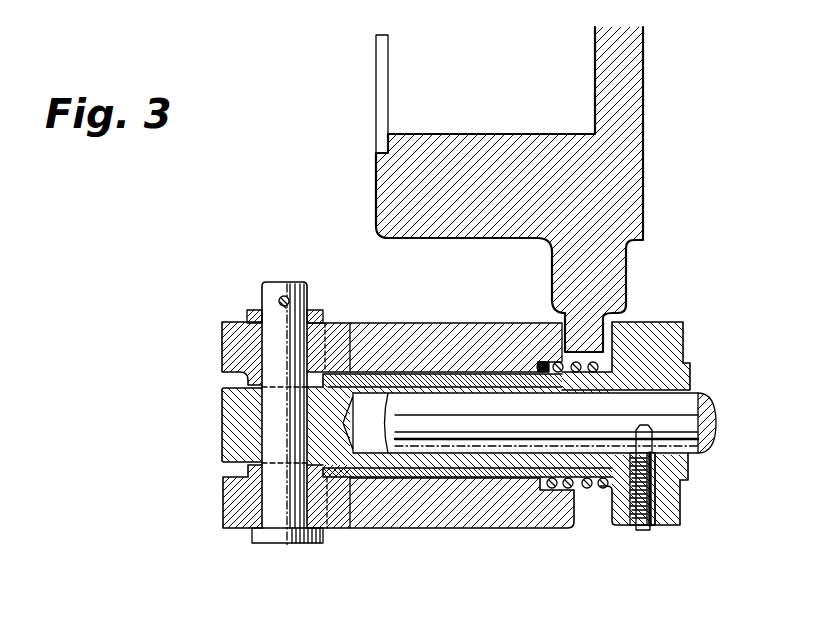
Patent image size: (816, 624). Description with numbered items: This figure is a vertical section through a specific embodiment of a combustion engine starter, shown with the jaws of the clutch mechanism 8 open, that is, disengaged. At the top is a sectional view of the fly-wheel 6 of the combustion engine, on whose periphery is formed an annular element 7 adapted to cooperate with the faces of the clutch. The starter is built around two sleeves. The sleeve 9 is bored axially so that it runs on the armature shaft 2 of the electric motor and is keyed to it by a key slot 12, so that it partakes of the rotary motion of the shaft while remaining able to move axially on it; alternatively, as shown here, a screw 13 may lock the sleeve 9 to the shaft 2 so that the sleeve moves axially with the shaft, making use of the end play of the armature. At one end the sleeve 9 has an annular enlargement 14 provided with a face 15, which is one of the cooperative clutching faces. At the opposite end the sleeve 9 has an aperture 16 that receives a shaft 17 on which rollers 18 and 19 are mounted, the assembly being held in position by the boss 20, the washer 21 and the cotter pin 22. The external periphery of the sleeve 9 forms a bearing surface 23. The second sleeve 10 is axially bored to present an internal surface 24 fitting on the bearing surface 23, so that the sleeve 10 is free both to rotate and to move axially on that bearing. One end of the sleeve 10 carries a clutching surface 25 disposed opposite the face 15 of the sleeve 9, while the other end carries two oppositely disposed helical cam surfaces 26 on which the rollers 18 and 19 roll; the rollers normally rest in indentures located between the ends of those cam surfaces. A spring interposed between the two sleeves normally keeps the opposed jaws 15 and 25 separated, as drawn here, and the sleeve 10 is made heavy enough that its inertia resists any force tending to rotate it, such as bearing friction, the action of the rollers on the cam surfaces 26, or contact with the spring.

The armature shaft 2 is at (713, 405).
The fly-wheel 6 is at (638, 195).
The annular element 7 is at (610, 317).
The clutch mechanism 8 is at (443, 518).
The sleeve 9 is at (690, 378).
The sleeve 10 is at (384, 335).
The key slot 12 is at (663, 405).
The screw 13 is at (648, 530).
The annular enlargement 14 is at (668, 322).
The face 15 is at (614, 498).
The aperture 16 is at (270, 430).
The shaft 17 is at (287, 282).
The roller 18 is at (220, 347).
The roller 19 is at (224, 513).
The boss 20 is at (290, 544).
The washer 21 is at (318, 312).
The cotter pin 22 is at (279, 299).
The bearing surface 23 is at (428, 373).
The internal surface 24 is at (476, 373).
The clutching surface 25 is at (567, 490).
The helical cam surface 26 is at (583, 490).